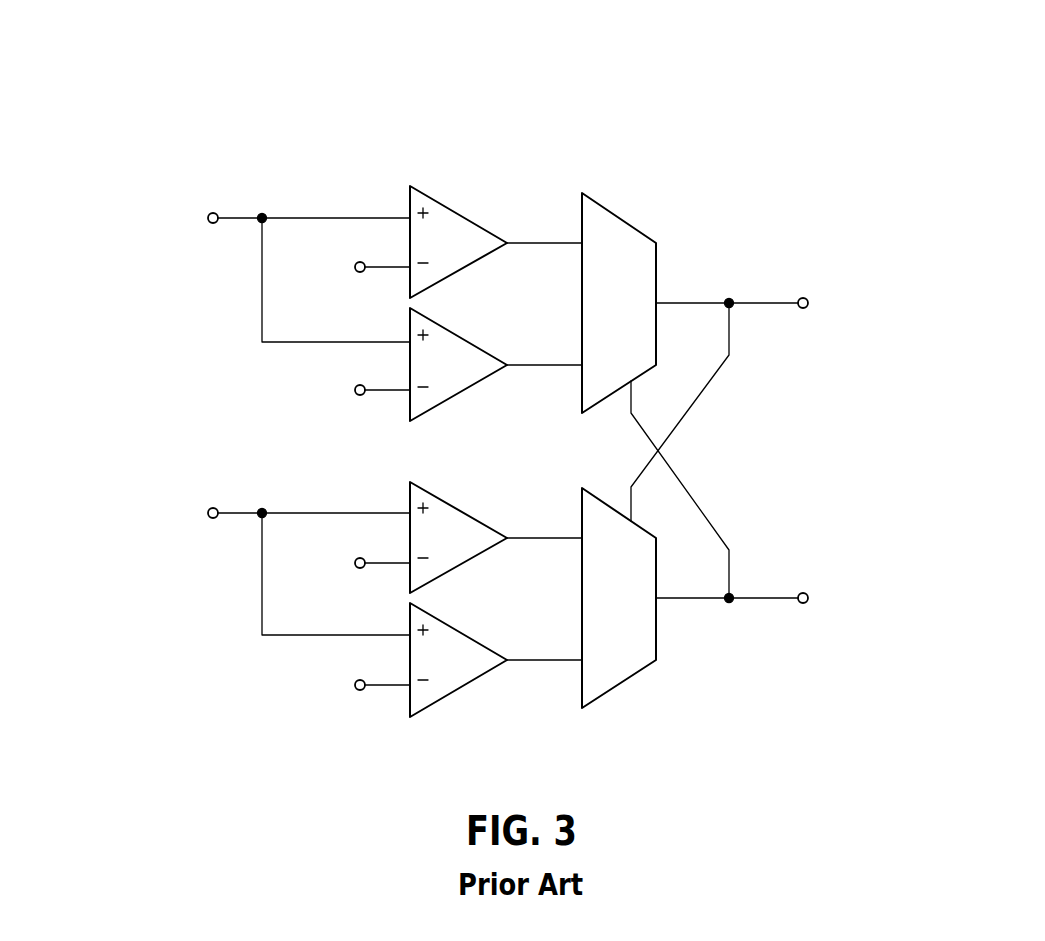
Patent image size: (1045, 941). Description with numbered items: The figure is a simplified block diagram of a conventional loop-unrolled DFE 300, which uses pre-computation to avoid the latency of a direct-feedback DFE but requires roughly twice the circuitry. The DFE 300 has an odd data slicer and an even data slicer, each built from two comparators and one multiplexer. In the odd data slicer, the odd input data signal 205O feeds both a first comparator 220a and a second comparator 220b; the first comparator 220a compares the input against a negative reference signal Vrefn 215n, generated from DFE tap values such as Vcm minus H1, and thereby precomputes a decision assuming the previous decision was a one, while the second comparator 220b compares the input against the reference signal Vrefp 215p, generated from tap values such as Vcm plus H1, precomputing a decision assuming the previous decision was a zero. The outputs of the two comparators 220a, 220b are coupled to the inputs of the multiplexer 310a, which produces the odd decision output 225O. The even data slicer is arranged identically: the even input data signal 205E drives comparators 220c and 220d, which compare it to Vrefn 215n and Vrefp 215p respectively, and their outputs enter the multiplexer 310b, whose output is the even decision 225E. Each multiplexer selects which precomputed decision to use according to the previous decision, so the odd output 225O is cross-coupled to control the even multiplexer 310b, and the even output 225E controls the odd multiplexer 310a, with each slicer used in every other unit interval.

The loop-unrolled DFE 300 is at (727, 105).
The odd input data signal 205O is at (281, 267).
The even input data signal 205E is at (281, 561).
The negative reference signal Vrefn 215n is at (351, 415).
The reference signal Vrefp 215p is at (351, 538).
The first comparator of the odd data slicer 220a is at (450, 208).
The second comparator of the odd data slicer 220b is at (450, 333).
The first comparator of the even data slicer 220c is at (450, 502).
The second comparator of the even data slicer 220d is at (450, 625).
The multiplexer of the odd data slicer 310a is at (622, 218).
The multiplexer of the even data slicer 310b is at (620, 682).
The odd data slicer decision output 225O is at (762, 306).
The even data slicer decision output 225E is at (761, 602).